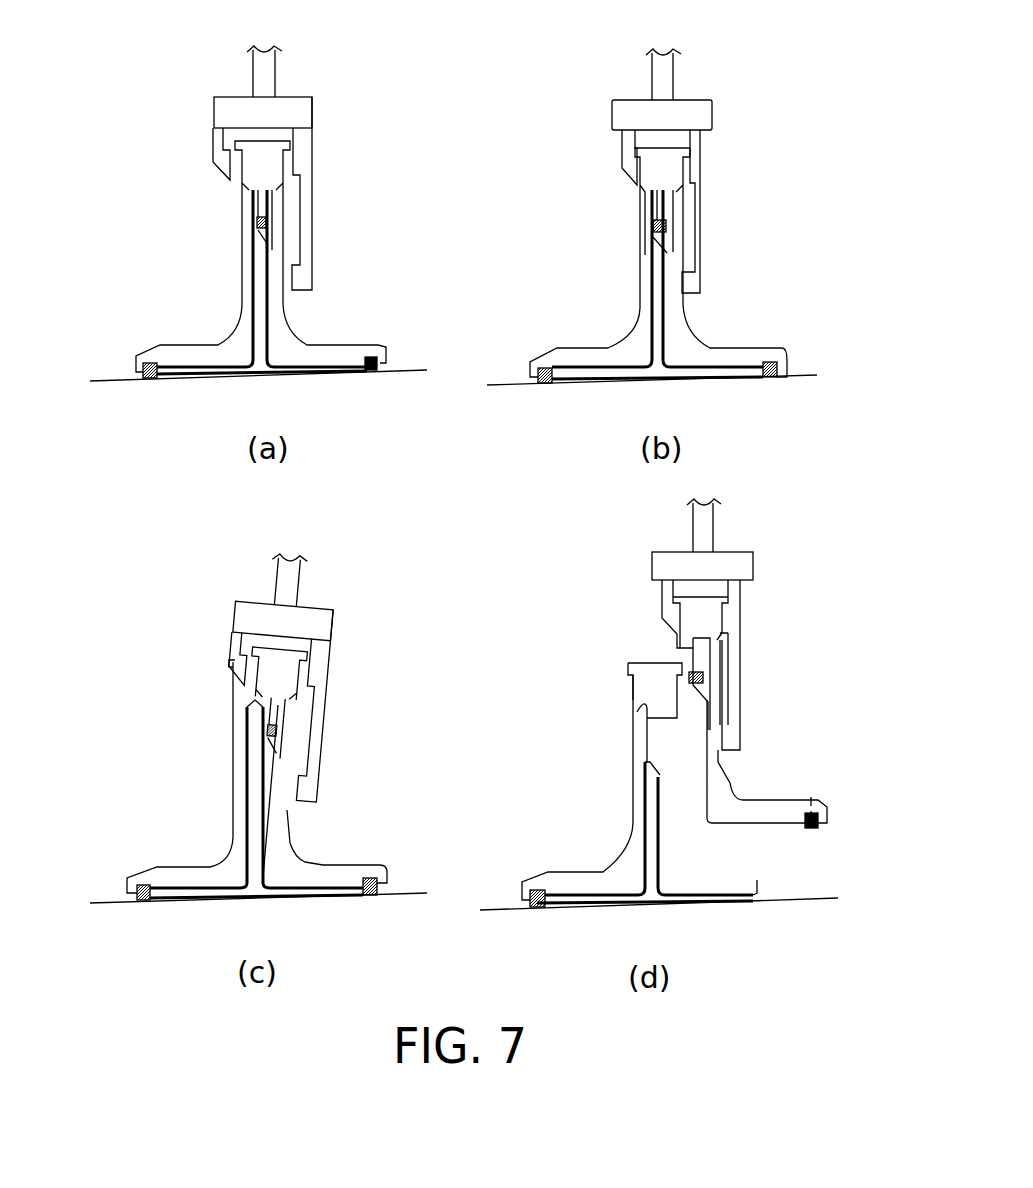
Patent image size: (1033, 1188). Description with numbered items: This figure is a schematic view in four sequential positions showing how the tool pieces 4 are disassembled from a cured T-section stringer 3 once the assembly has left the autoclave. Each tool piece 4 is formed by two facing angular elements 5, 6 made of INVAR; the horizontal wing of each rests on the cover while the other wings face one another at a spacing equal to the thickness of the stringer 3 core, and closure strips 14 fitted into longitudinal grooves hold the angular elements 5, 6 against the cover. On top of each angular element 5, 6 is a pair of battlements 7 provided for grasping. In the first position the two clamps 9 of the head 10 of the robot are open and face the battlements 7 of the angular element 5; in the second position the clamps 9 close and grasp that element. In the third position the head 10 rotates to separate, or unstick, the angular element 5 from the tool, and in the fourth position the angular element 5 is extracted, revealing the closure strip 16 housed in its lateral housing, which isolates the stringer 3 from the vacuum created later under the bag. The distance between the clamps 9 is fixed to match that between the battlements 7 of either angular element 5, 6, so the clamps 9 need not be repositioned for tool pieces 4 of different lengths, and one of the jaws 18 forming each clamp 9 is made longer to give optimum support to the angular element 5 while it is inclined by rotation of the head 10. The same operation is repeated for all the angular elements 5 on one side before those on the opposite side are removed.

The stringer 3 is at (257, 312).
The tool piece 4 is at (207, 673).
The angular element 5 is at (283, 330).
The angular element 6 is at (238, 277).
The battlement 7 is at (250, 161).
The clamp 9 is at (231, 101).
The head 10 is at (297, 78).
The closure strip 14 is at (152, 380).
The closure strip 16 is at (255, 222).
The jaw 18 is at (307, 223).